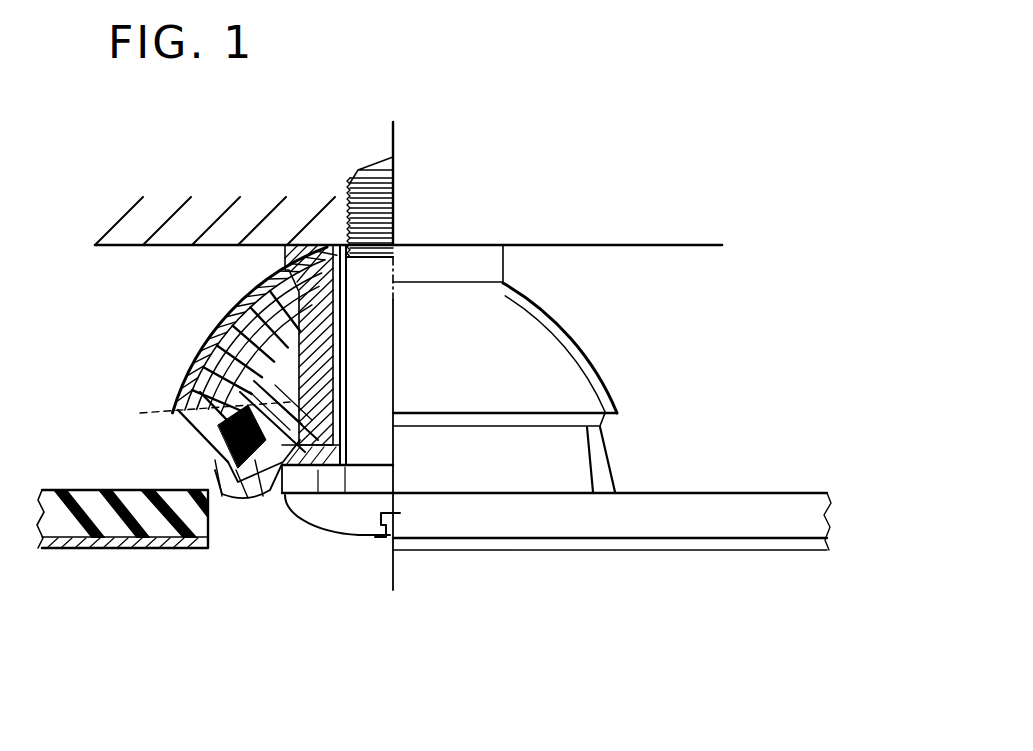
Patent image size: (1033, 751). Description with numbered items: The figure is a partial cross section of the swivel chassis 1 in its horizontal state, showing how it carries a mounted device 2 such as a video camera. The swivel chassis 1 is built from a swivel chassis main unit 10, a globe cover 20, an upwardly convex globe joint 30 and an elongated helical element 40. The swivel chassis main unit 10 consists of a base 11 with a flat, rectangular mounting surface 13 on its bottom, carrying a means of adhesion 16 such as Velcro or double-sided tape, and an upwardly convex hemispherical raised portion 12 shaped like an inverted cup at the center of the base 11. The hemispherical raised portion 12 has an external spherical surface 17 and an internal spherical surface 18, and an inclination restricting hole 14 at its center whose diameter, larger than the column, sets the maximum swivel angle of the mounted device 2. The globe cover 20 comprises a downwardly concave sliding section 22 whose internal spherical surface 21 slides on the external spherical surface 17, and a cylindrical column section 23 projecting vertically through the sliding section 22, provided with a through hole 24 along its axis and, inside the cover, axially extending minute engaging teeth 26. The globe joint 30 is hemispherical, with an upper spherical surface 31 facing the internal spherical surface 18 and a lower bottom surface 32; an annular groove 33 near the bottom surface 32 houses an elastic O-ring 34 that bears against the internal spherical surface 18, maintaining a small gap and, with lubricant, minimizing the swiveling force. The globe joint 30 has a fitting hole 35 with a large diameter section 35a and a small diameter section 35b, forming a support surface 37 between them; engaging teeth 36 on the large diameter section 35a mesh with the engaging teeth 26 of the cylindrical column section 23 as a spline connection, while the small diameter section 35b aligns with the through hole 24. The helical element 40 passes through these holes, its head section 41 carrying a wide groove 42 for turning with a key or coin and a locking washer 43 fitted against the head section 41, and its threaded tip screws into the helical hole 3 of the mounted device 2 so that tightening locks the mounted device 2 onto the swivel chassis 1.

The swivel chassis 1 is at (557, 335).
The mounted device 2 is at (588, 199).
The helical hole 3 is at (348, 215).
The swivel chassis main unit 10 is at (556, 524).
The base 11 is at (518, 530).
The hemispherical raised portion 12 is at (570, 472).
The mounting surface 13 is at (730, 545).
The inclination restricting hole 14 is at (272, 312).
The means of adhesion 16 is at (120, 552).
The external spherical surface 17 is at (236, 420).
The internal spherical surface 18 is at (216, 470).
The globe cover 20 is at (577, 331).
The internal spherical surface 21 is at (215, 389).
The sliding section 22 is at (552, 392).
The cylindrical column section 23 is at (287, 305).
The through hole 24 is at (285, 253).
The engaging teeth 26 is at (340, 318).
The globe joint 30 is at (263, 498).
The spherical surface 31 is at (242, 370).
The bottom surface 32 is at (246, 500).
The annular groove 33 is at (225, 498).
The O-ring 34 is at (232, 450).
The fitting hole 35 is at (256, 336).
The large diameter section 35a is at (184, 410).
The small diameter section 35b is at (362, 530).
The engaging teeth 36 is at (337, 373).
The support surface 37 is at (330, 500).
The helical element 40 is at (345, 495).
The head section 41 is at (383, 540).
The groove 42 is at (440, 540).
The locking washer 43 is at (308, 495).